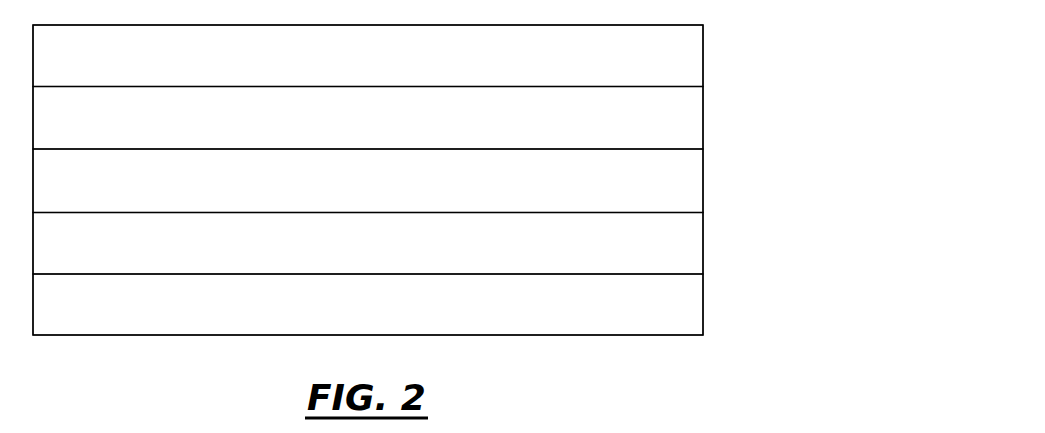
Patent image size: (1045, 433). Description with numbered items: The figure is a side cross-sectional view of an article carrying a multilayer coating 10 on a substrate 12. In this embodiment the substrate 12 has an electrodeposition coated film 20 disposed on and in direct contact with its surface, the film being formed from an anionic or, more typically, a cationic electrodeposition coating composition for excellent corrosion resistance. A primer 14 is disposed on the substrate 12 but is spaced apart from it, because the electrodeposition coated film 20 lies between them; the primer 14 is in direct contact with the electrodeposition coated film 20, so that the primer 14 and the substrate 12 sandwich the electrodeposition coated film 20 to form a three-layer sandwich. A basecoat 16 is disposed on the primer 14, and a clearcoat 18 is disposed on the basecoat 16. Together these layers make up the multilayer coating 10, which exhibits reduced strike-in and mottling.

The multilayer coating 10 is at (853, 183).
The substrate 12 is at (683, 310).
The primer 14 is at (683, 182).
The basecoat 16 is at (690, 124).
The clearcoat 18 is at (687, 62).
The electrodeposition coated film 20 is at (683, 246).